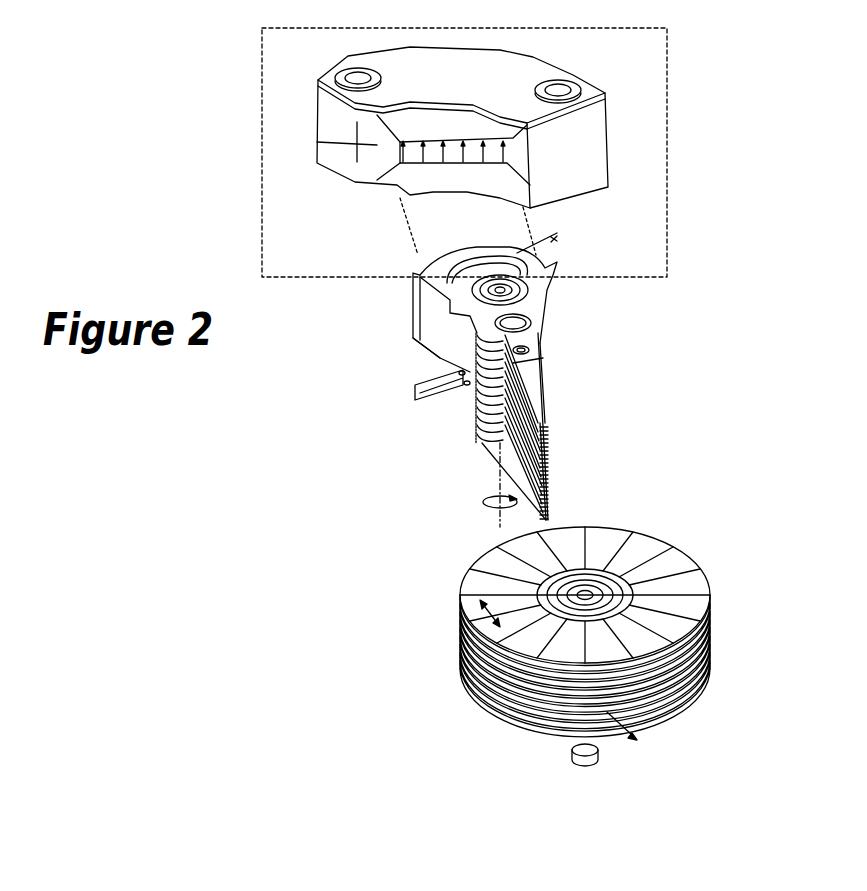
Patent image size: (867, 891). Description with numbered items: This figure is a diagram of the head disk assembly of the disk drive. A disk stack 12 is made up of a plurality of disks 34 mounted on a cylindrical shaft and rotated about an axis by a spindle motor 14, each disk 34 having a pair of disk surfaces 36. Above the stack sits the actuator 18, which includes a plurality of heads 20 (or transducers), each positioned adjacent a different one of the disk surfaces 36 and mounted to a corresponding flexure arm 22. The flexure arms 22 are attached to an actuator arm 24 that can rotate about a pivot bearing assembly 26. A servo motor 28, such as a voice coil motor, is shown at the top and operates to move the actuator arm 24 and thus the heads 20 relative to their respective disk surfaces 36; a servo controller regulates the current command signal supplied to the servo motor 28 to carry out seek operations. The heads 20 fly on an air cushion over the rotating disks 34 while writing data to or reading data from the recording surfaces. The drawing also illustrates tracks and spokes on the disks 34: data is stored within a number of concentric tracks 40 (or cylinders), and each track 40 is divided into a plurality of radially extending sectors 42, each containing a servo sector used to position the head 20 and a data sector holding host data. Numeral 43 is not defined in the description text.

The disk stack 12 is at (586, 628).
The spindle motor 14 is at (572, 757).
The actuator 18 is at (587, 387).
The head 20 is at (547, 424).
The flexure arm 22 is at (540, 385).
The actuator arm 24 is at (538, 332).
The pivot bearing assembly 26 is at (530, 290).
The servo motor 28 is at (667, 142).
The disk 34 is at (629, 741).
The disk surface 36 is at (693, 608).
The concentric track 40 is at (603, 563).
The radially extending sector 42 is at (477, 612).
The track center line 43 is at (497, 590).